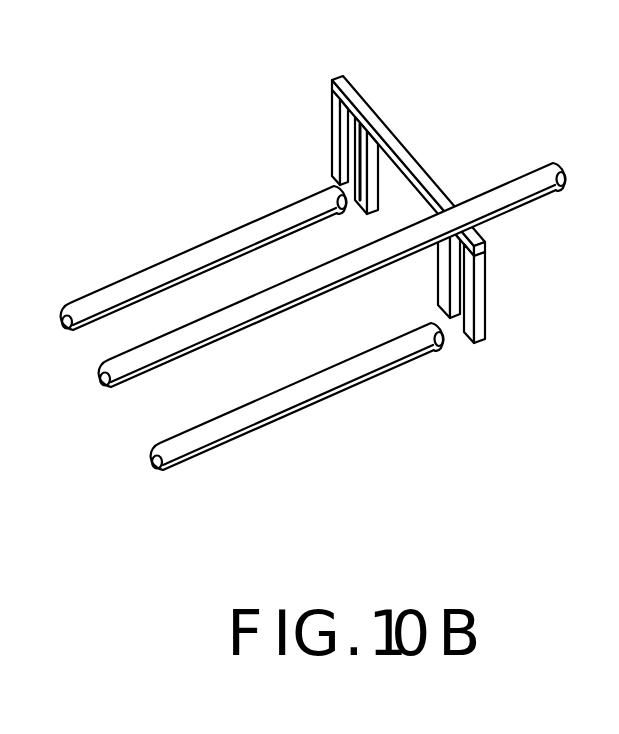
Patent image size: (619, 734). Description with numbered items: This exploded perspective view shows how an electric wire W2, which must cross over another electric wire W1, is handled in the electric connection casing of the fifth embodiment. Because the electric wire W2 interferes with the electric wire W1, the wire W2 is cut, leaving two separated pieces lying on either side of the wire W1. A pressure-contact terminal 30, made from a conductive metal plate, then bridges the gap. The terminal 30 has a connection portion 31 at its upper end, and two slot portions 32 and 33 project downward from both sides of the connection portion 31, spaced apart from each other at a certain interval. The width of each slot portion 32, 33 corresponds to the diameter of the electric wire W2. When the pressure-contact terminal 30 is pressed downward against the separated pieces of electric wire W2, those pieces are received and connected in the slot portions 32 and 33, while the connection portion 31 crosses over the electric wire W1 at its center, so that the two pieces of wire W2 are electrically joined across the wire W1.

The pressure-contact terminal 30 is at (399, 181).
The connection portion 31 is at (400, 182).
The slot portion 32 is at (484, 316).
The slot portion 33 is at (336, 152).
The electric wire W1 is at (148, 365).
The electric wire W2 is at (158, 273).